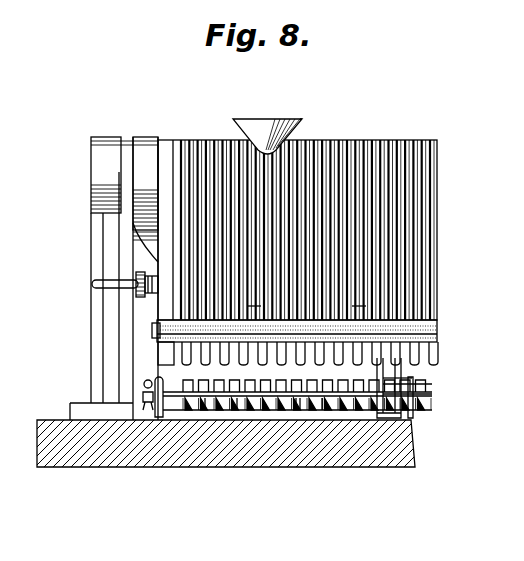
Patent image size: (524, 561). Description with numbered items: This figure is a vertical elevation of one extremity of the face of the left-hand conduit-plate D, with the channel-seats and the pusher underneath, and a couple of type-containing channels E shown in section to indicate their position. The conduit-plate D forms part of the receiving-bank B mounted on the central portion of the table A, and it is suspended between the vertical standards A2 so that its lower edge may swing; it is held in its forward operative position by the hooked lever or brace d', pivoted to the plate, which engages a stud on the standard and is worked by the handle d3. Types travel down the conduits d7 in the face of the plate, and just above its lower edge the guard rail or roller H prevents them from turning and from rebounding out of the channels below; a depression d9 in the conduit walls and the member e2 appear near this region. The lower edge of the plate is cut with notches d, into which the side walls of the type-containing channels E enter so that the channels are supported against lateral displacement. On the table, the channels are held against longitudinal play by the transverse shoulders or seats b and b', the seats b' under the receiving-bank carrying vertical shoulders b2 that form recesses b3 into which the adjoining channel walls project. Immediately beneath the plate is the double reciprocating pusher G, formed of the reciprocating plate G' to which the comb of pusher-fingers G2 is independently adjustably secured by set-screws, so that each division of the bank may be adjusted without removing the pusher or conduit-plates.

The table A is at (225, 443).
The vertical standard A2 is at (114, 278).
The receiving-bank B is at (341, 103).
The hopper or funnel O is at (267, 126).
The conduit-plate D is at (297, 230).
The conduit d7 is at (260, 298).
The cylinder part d9 is at (364, 299).
The handle d3 is at (107, 278).
The hooked lever or brace d' is at (147, 276).
The notch d is at (162, 277).
The guard rail or roller H is at (295, 342).
The comb or series of pusher-fingers G2 is at (297, 389).
The pusher G is at (447, 374).
The reciprocating plate or bar G' is at (429, 398).
The transverse shoulder or seat b is at (307, 406).
The seat b' is at (193, 445).
The vertical shoulder or projection b2 is at (314, 399).
The recess b3 is at (206, 413).
The rod e2 is at (418, 380).
The type-containing channel E is at (386, 468).